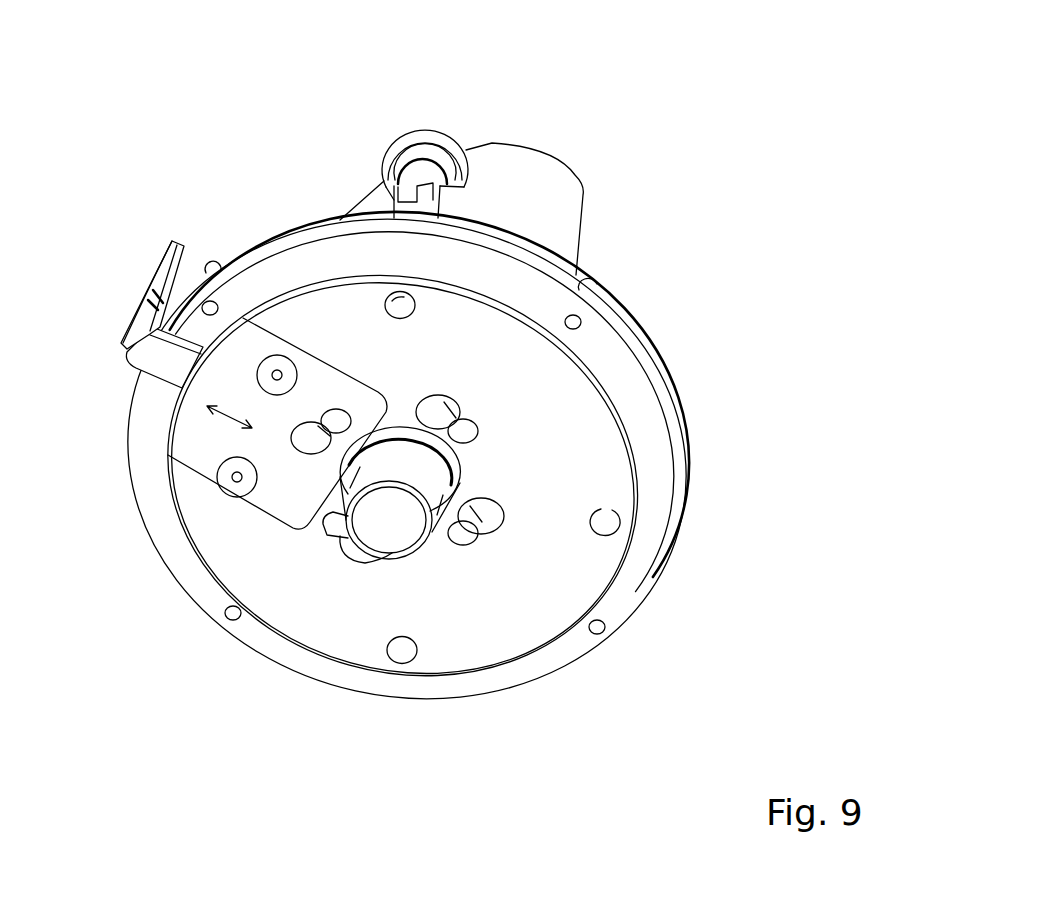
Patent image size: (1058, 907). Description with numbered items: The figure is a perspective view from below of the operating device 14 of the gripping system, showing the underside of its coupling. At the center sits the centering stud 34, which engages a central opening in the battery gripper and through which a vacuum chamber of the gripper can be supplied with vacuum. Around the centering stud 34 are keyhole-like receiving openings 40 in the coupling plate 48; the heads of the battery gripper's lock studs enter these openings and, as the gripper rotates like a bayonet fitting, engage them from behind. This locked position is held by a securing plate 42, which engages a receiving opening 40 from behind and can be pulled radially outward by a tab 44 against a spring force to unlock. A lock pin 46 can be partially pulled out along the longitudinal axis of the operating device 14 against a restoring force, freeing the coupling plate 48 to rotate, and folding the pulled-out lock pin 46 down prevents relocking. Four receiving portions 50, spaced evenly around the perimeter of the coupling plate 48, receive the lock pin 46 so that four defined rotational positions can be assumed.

The operating device 14 is at (647, 87).
The centering stud 34 is at (393, 557).
The receiving openings 40 is at (482, 442).
The securing plate 42 is at (228, 423).
The tab 44 is at (165, 267).
The lock pin 46 is at (422, 130).
The coupling plate 48 is at (573, 413).
The receiving portions 50 is at (609, 495).